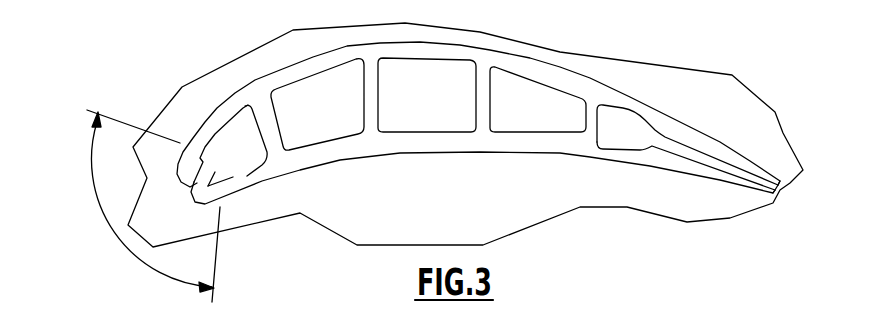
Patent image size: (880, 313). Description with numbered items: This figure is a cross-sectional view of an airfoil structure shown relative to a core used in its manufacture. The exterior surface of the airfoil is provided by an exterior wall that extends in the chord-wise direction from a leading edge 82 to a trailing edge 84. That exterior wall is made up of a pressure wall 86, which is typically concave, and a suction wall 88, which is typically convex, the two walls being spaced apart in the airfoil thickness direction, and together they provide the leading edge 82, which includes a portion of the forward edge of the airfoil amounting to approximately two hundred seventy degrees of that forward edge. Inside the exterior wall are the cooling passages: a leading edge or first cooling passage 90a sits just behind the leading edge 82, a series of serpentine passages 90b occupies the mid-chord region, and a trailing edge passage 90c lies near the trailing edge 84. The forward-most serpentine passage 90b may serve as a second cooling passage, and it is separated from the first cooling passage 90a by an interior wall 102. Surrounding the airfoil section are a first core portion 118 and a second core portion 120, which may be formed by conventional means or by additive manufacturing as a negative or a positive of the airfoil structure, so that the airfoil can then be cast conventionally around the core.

The leading edge 82 is at (100, 200).
The trailing edge 84 is at (782, 181).
The pressure wall 86 is at (329, 155).
The suction wall 88 is at (330, 51).
The first cooling passage 90a is at (233, 177).
The serpentine passages 90b is at (528, 131).
The trailing edge passage 90c is at (616, 148).
The interior wall 102 is at (271, 130).
The first core portion 118 is at (230, 143).
The second core portion 120 is at (222, 86).